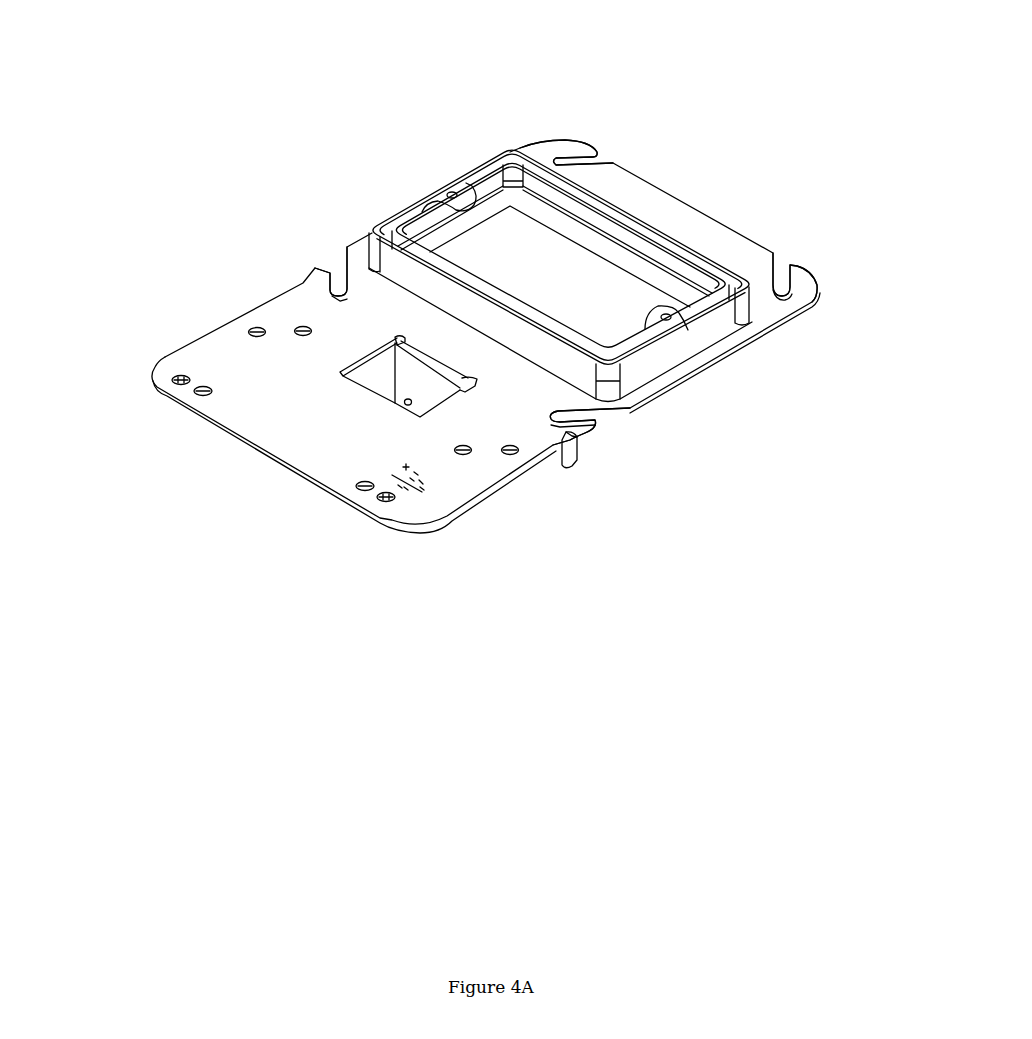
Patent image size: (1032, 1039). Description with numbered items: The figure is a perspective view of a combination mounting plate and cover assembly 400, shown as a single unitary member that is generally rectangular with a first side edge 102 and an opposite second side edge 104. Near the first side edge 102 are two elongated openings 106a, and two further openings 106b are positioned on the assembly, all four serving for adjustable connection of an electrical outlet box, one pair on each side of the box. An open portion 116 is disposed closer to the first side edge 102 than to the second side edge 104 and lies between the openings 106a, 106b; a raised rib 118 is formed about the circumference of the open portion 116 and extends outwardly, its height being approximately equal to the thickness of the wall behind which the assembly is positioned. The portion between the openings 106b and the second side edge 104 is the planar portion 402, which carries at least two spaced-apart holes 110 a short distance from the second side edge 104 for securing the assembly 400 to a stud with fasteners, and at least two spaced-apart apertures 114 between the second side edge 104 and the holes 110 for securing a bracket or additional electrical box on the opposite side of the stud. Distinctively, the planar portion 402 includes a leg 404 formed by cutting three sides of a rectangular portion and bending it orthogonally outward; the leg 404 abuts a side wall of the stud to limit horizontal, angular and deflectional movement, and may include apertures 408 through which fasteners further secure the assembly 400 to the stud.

The combination mounting plate and cover assembly 400 is at (168, 42).
The planar portion 402 is at (250, 378).
The first side edge 102 is at (677, 196).
The second side edge 104 is at (420, 417).
The openings 106a is at (570, 167).
The openings 106b is at (337, 282).
The holes 110 is at (298, 330).
The apertures 114 is at (175, 380).
The open portion 116 is at (488, 247).
The raised rib 118 is at (505, 152).
The leg 404 is at (437, 388).
The apertures 408 is at (397, 403).